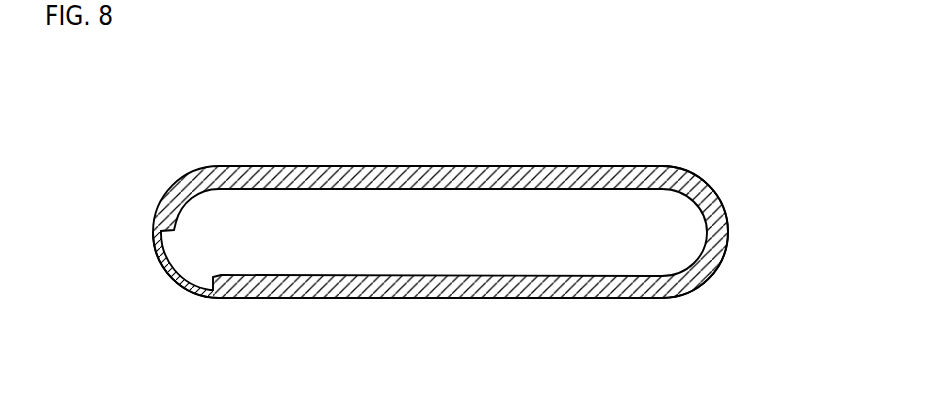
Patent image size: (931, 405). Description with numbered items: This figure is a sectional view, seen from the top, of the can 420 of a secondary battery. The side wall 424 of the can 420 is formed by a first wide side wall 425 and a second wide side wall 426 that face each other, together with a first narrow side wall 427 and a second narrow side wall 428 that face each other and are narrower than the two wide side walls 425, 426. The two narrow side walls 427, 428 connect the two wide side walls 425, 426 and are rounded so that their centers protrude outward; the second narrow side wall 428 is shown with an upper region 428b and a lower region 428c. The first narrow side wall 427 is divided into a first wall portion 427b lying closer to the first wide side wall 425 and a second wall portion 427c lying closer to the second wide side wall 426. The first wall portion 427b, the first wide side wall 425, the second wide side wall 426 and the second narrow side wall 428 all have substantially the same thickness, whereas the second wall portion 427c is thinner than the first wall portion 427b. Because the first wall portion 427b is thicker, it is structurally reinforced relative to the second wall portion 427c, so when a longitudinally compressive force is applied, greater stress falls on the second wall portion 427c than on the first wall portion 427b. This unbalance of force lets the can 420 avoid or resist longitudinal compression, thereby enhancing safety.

The can 420 is at (140, 112).
The side wall 424 is at (573, 166).
The first wide side wall 425 is at (398, 166).
The second wide side wall 426 is at (303, 298).
The first narrow side wall 427 is at (152, 234).
The first wall portion 427b is at (177, 192).
The second wall portion 427c is at (166, 273).
The second narrow side wall 428 is at (730, 240).
The upper portion of second end 428b is at (710, 193).
The lower portion of second end 428c is at (707, 277).